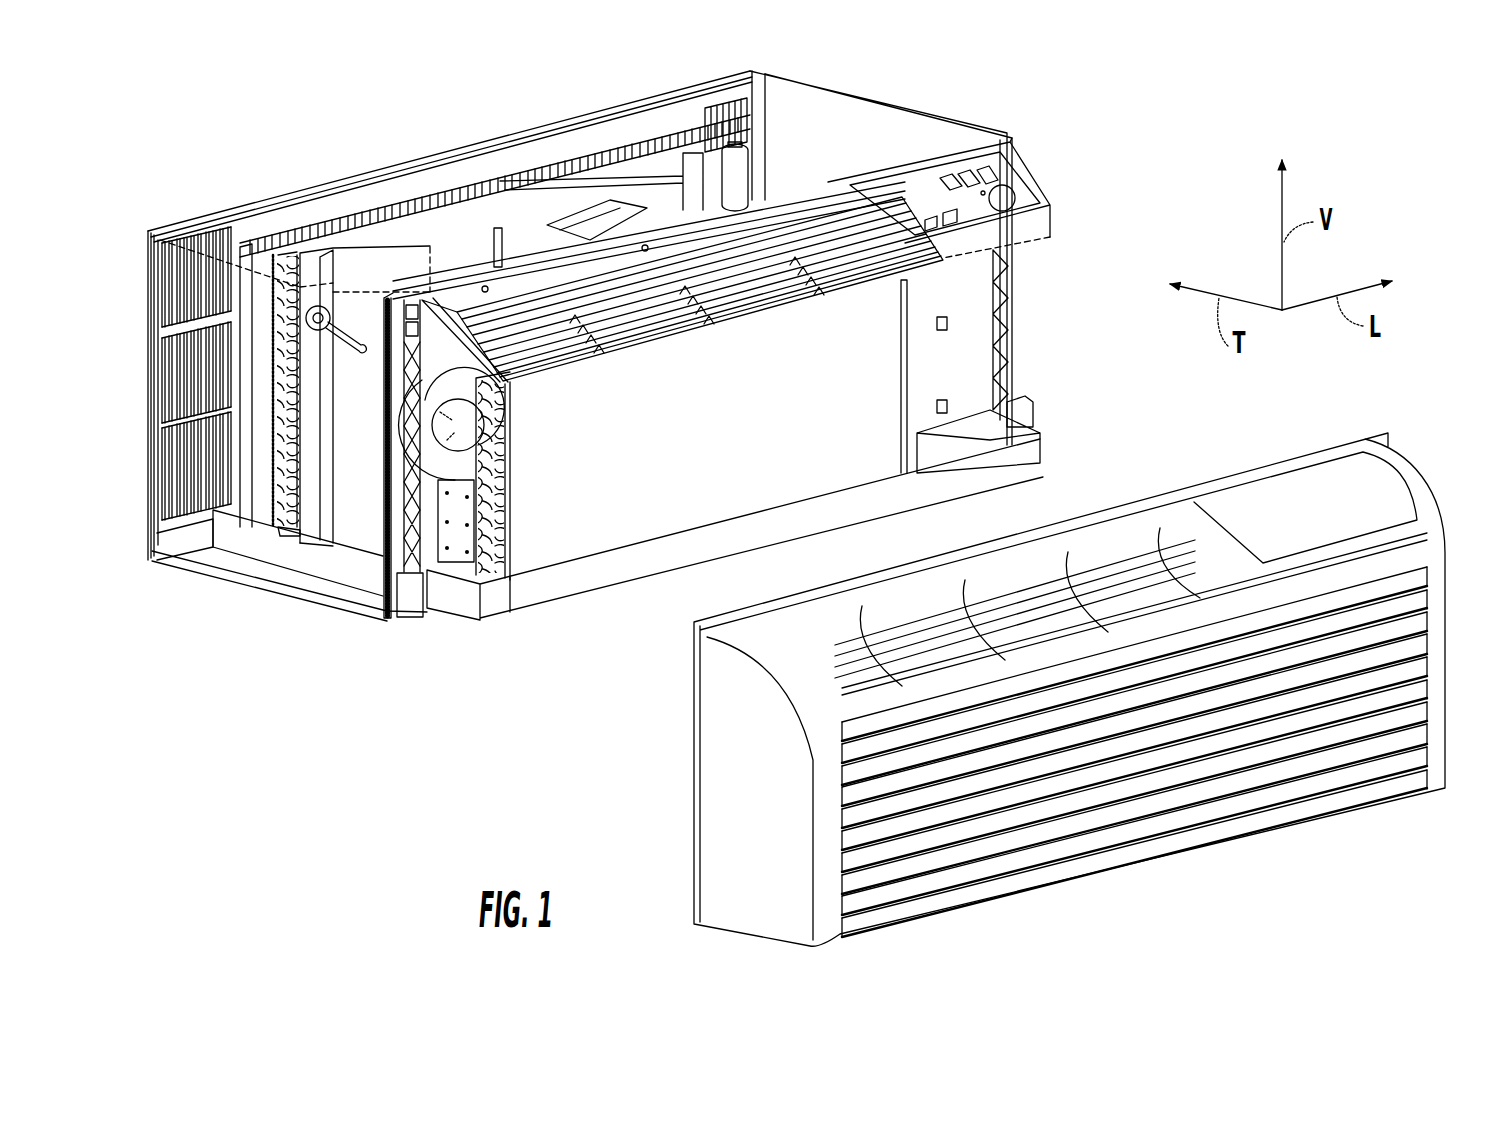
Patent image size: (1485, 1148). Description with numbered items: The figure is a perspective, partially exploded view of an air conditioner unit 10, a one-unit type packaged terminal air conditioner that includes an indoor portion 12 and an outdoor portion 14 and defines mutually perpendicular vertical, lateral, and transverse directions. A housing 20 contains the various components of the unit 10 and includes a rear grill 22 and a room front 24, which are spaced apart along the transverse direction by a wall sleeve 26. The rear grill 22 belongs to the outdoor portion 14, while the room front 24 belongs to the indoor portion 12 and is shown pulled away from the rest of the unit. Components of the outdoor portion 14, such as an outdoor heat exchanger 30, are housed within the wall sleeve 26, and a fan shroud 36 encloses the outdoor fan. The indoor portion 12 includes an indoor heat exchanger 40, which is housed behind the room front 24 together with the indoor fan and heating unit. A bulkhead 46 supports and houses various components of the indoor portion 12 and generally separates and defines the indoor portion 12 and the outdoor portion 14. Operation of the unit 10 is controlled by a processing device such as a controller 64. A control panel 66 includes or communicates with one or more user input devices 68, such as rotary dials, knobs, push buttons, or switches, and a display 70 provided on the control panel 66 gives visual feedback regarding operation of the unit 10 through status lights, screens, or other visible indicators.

The air conditioner unit 10 is at (1168, 126).
The indoor portion 12 is at (448, 632).
The outdoor portion 14 is at (262, 600).
The housing 20 is at (978, 108).
The rear grill 22 is at (540, 125).
The room front 24 is at (1424, 530).
The wall sleeve 26 is at (830, 115).
The outdoor heat exchanger 30 is at (273, 443).
The fan shroud 36 is at (453, 227).
The indoor heat exchanger 40 is at (545, 541).
The bulkhead 46 is at (390, 519).
The controller 64 is at (1050, 223).
The control panel 66 is at (900, 193).
The user input devices 68 is at (917, 197).
The display 70 is at (1000, 175).